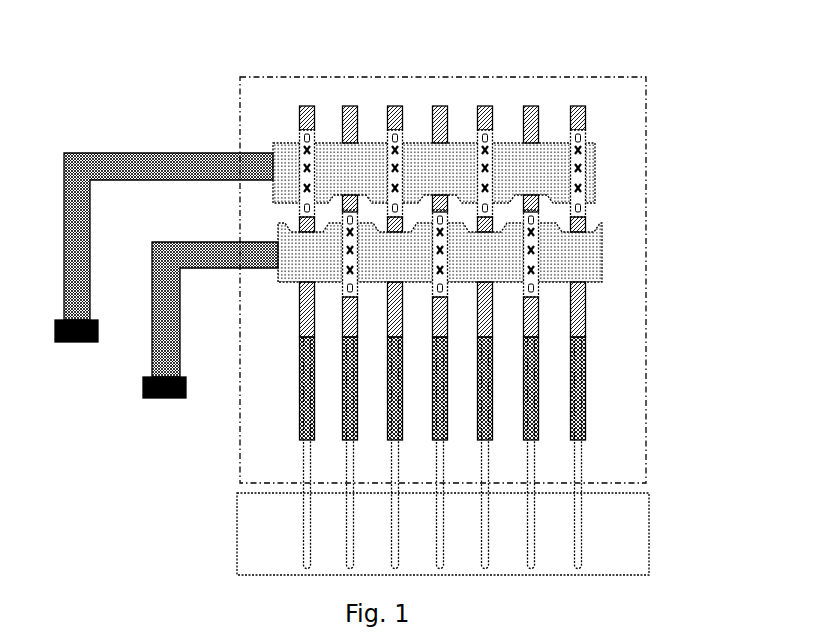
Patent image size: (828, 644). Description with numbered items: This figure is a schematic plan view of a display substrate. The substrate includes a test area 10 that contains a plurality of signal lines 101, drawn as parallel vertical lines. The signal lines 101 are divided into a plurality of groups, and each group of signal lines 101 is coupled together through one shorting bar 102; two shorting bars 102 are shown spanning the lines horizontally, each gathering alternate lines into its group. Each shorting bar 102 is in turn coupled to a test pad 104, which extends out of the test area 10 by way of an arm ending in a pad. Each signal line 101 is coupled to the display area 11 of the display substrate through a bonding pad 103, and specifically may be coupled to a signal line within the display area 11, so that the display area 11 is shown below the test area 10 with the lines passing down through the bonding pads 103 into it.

The test area 10 is at (646, 278).
The display area 11 is at (650, 533).
The signal lines 101 is at (577, 110).
The shorting bar 102 is at (597, 170).
The bonding pad 103 is at (587, 387).
The test pad 104 is at (99, 322).